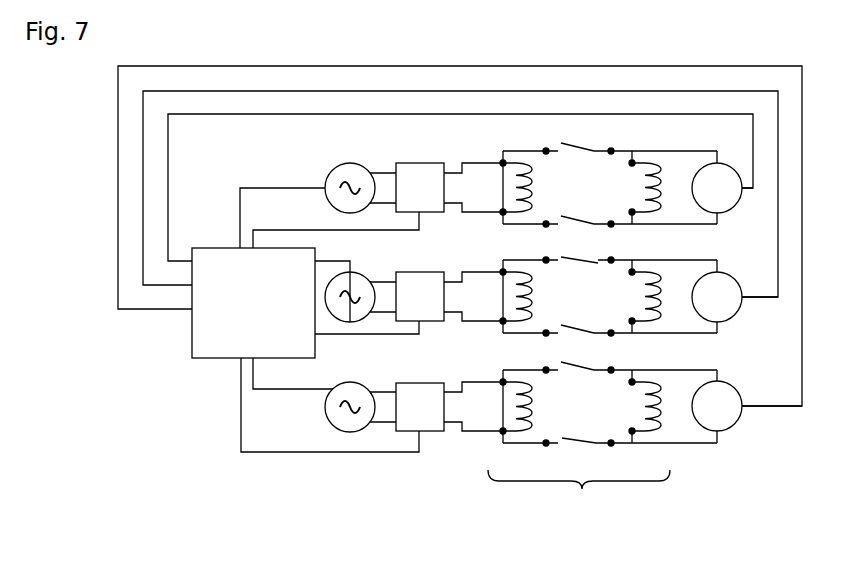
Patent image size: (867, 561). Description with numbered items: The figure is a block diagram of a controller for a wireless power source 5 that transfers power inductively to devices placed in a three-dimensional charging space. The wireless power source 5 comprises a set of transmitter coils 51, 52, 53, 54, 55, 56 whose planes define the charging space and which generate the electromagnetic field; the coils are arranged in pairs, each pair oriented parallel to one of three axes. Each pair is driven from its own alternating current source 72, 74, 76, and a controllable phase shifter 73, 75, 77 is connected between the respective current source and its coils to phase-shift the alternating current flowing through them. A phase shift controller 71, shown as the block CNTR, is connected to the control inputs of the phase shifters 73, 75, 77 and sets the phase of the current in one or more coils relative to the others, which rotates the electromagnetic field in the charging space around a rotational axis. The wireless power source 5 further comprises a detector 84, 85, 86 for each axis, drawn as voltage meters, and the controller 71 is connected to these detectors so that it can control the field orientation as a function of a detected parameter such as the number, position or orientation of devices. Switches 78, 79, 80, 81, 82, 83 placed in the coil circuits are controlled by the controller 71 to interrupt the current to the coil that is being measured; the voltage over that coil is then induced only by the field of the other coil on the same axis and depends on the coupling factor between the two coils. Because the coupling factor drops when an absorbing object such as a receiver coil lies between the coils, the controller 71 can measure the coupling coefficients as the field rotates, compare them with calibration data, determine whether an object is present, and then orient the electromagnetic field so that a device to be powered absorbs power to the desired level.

The wireless power source 5 is at (579, 497).
The transmitter coil 51 is at (523, 162).
The transmitter coil 52 is at (648, 162).
The transmitter coil 53 is at (523, 272).
The transmitter coil 54 is at (648, 272).
The transmitter coil 55 is at (521, 433).
The transmitter coil 56 is at (648, 433).
The phase shift controller 71 is at (243, 248).
The current source 72 is at (348, 163).
The phase shifter 73 is at (417, 163).
The current source 74 is at (355, 272).
The phase shifter 75 is at (423, 272).
The current source 76 is at (348, 432).
The phase shifter 77 is at (417, 433).
The switch 78 is at (598, 142).
The switch 79 is at (582, 218).
The switch 80 is at (588, 264).
The switch 81 is at (570, 324).
The switch 82 is at (587, 372).
The switch 83 is at (570, 436).
The detector 84 is at (738, 198).
The detector 85 is at (738, 307).
The detector 86 is at (738, 416).